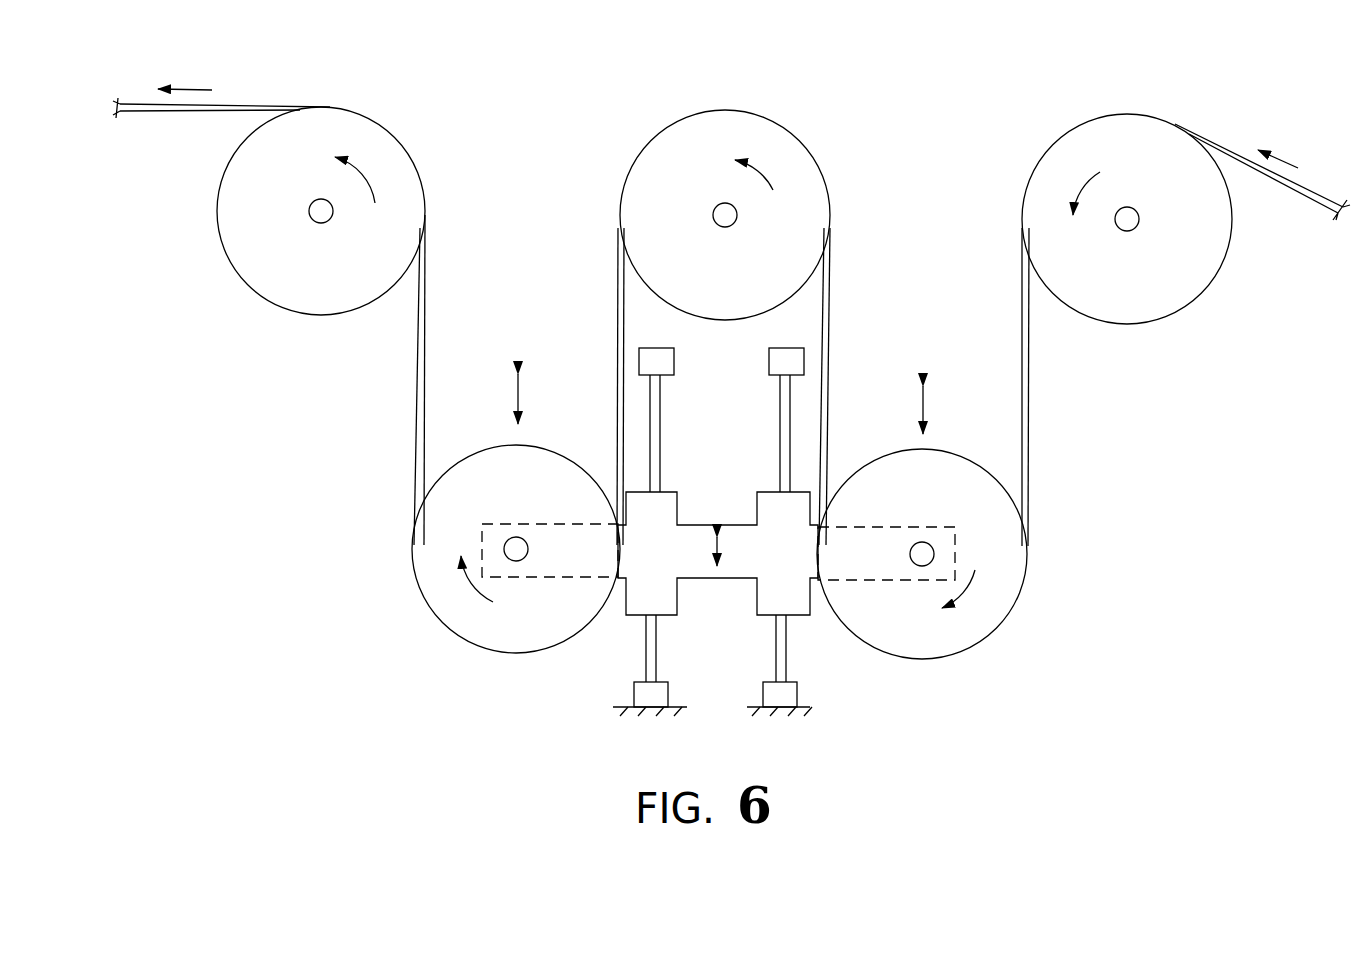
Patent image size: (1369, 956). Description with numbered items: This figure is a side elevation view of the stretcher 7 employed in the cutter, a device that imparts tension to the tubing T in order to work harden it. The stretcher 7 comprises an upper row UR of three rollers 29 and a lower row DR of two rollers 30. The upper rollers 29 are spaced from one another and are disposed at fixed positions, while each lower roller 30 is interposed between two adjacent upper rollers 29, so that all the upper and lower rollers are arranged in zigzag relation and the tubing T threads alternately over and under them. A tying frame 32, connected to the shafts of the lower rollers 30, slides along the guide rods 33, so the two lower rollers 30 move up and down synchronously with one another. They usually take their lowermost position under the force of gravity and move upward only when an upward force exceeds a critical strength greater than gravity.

The stretcher 7 is at (1012, 92).
The upper roller 29 is at (360, 137).
The lower roller 30 is at (490, 623).
The tying frame 32 is at (687, 568).
The guide rod 33 is at (658, 405).
The upper row UR is at (639, 118).
The lower row DR is at (1015, 647).
The tubing T is at (1310, 193).